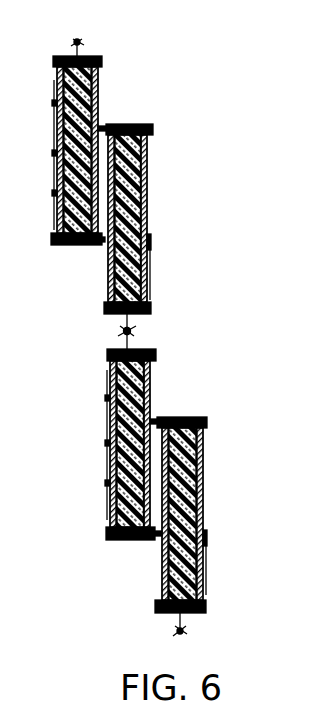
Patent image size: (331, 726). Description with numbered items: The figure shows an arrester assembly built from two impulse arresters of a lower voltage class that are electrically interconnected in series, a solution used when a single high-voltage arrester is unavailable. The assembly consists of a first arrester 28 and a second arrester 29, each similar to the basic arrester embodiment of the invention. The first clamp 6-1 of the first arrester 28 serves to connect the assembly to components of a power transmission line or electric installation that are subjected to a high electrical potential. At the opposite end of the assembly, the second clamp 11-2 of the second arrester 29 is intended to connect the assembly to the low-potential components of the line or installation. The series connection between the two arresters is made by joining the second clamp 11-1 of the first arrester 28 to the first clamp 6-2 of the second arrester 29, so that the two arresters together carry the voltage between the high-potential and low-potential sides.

The first arrester 28 is at (198, 198).
The second arrester 29 is at (247, 496).
The first clamp of the first arrester 6-1 is at (83, 43).
The first clamp of the second arrester 6-2 is at (138, 329).
The second clamp of the first arrester 11-1 is at (120, 331).
The second clamp of the second arrester 11-2 is at (185, 631).